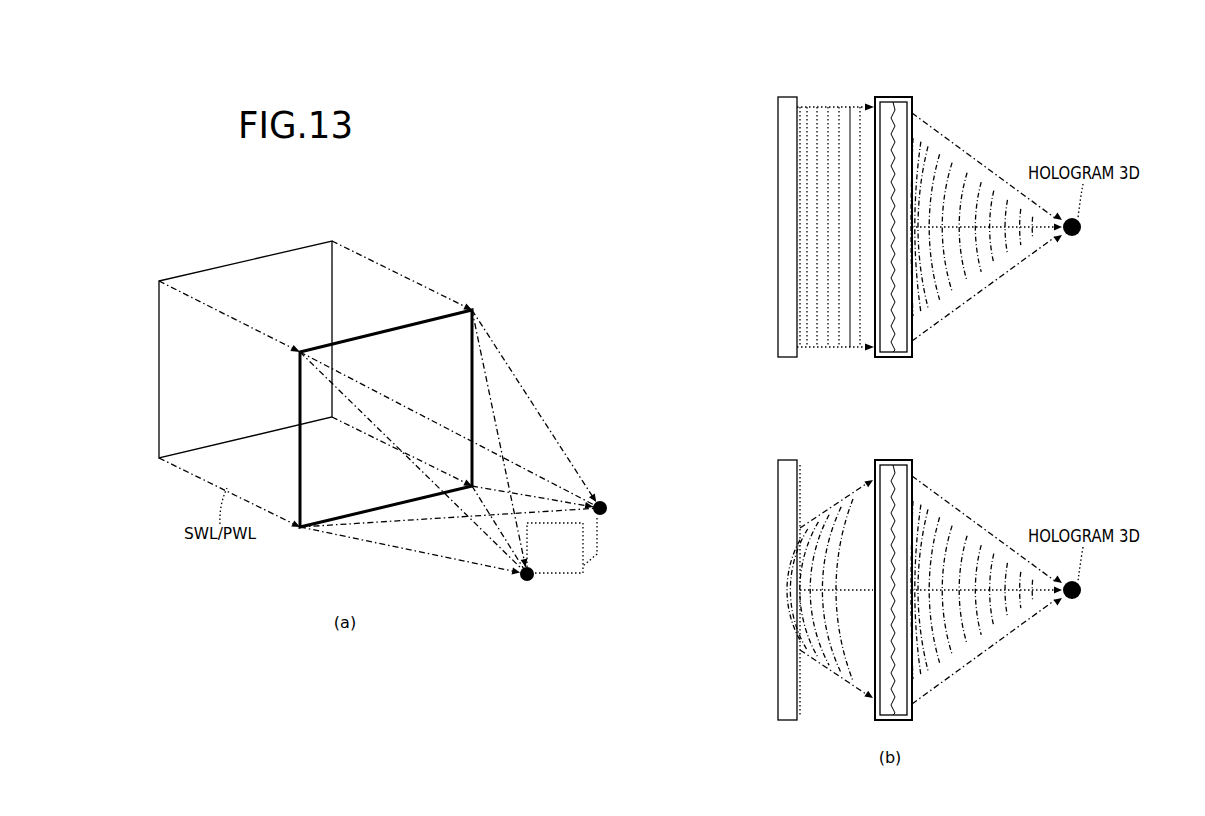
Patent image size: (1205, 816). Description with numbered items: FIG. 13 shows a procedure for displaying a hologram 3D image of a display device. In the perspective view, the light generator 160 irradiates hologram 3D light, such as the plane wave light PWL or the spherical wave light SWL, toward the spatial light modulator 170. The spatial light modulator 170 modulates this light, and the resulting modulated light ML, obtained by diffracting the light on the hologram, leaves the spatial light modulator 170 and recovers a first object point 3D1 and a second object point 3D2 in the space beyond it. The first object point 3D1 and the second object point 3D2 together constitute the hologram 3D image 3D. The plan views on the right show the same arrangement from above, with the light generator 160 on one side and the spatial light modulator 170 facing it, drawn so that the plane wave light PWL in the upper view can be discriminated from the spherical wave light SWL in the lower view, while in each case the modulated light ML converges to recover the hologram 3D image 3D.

The light generator 160 is at (243, 261).
The spatial light modulator 170 is at (475, 372).
The first object point 3D1 is at (527, 581).
The second object point 3D2 is at (607, 503).
The hologram 3D image 3D is at (562, 544).
The modulated light ML is at (400, 546).
The plane wave light PWL is at (835, 350).
The spherical wave light SWL is at (832, 678).